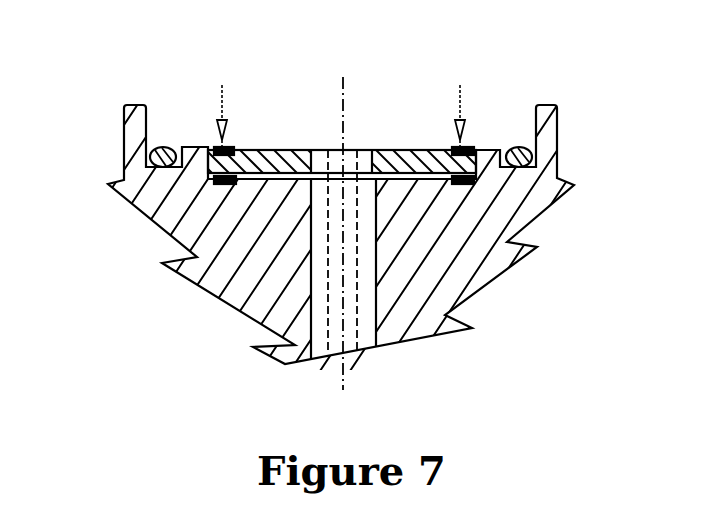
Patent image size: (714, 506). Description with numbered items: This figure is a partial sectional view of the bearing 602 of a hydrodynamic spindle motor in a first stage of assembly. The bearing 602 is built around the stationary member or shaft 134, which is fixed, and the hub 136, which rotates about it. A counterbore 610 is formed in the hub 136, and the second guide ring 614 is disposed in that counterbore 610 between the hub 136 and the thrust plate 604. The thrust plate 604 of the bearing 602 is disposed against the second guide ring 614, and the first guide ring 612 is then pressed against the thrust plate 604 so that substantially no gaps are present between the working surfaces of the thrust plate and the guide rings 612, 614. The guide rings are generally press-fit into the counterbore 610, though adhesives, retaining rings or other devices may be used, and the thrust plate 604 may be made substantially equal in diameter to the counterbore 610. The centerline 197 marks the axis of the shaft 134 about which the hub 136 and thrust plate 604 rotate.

The stationary member (shaft) 134 is at (340, 150).
The hub 136 is at (353, 235).
The central axis 197 is at (340, 87).
The bearing 602 is at (180, 181).
The thrust plate 604 is at (264, 148).
The counterbore 610 is at (218, 183).
The first guide ring 612 is at (463, 147).
The second guide ring 614 is at (458, 180).